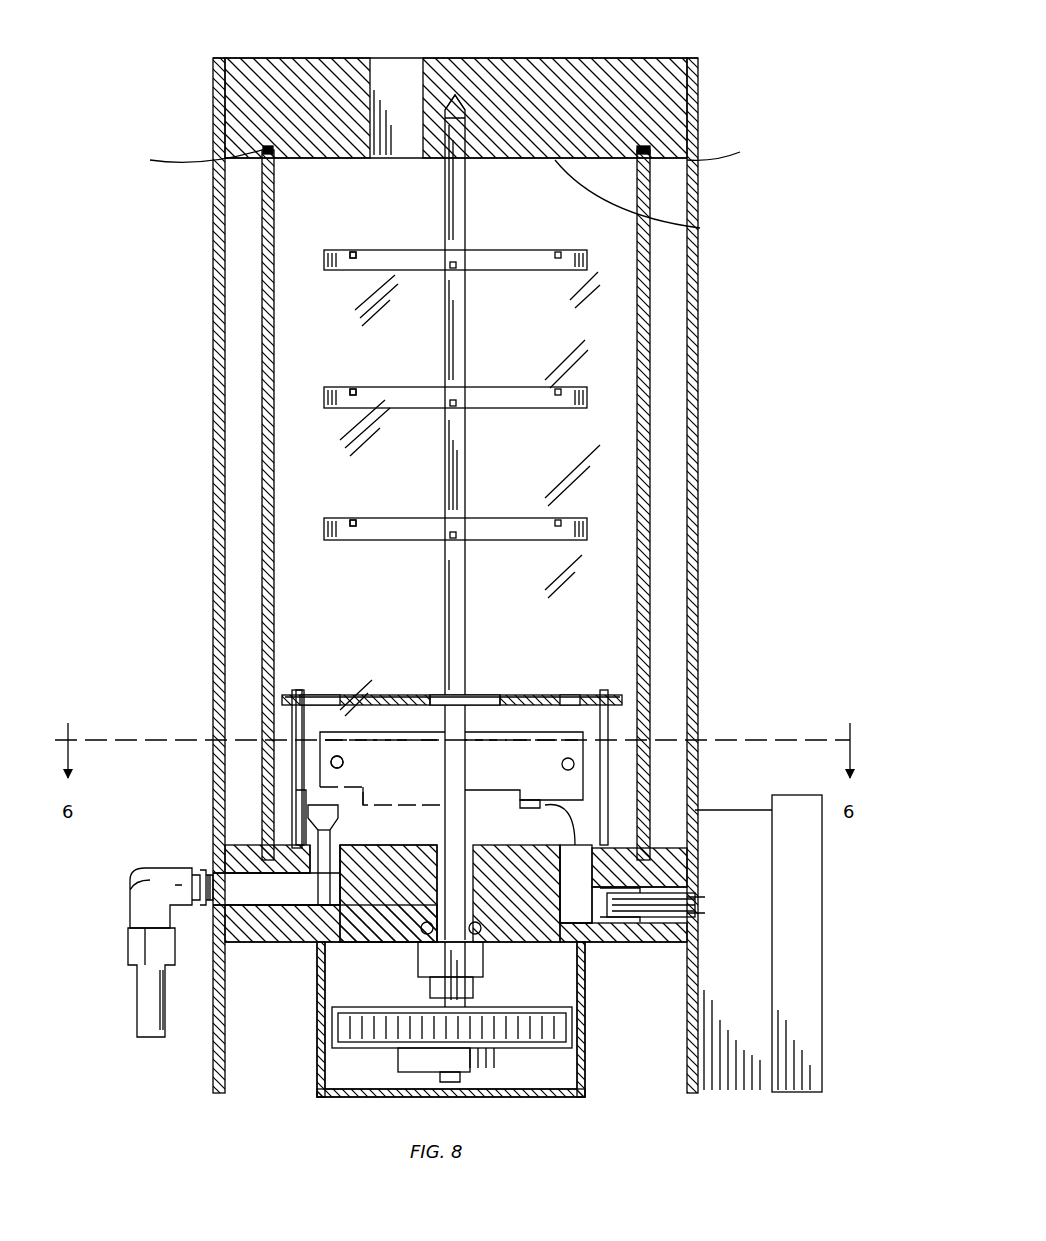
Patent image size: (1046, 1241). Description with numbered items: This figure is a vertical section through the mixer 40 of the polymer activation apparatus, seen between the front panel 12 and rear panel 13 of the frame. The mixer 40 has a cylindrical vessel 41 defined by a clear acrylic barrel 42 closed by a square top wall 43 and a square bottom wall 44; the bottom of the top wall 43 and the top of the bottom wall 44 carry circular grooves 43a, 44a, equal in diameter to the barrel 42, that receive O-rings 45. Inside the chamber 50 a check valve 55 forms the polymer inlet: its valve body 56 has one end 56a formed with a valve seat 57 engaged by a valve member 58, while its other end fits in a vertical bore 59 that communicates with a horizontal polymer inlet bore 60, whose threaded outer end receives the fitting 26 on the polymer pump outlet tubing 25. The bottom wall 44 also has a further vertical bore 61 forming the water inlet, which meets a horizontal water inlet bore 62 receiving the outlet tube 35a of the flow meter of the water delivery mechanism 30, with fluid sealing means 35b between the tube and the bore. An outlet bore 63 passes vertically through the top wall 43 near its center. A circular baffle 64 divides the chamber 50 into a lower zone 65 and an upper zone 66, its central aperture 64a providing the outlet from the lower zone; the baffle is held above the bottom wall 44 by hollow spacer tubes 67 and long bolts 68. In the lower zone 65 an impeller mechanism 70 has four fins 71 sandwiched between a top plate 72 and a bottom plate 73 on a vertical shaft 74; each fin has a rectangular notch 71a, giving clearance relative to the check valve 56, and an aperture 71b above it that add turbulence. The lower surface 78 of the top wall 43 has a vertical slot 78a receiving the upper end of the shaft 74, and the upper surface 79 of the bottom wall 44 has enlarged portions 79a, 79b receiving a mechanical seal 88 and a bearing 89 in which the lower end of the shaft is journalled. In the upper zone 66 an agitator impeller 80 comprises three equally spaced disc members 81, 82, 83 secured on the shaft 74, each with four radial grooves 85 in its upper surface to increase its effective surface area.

The front panel 12 is at (214, 378).
The rear panel 13 is at (698, 490).
The tubing 25 is at (137, 1015).
The fitting 26 is at (140, 885).
The water delivery mechanism 30 is at (822, 905).
The outlet tube 35a is at (680, 910).
The fluid sealing means 35b is at (650, 930).
The mixer 40 is at (716, 330).
The cylindrical vessel 41 is at (652, 572).
The barrel 42 is at (648, 482).
The top wall 43 is at (664, 58).
The circular groove 43a is at (445, 143).
The bottom wall 44 is at (660, 850).
The circular groove 44a is at (290, 842).
The O-rings 45 is at (640, 148).
The chamber 50 is at (622, 457).
The check valve 55 is at (296, 820).
The valve body 56 is at (335, 826).
The end of valve body 56a is at (350, 815).
The valve seat 57 is at (305, 805).
The valve member 58 is at (325, 805).
The vertically oriented bore 59 is at (322, 888).
The polymer inlet bore 60 is at (272, 900).
The vertical bore 61 is at (575, 855).
The water inlet bore 62 is at (605, 942).
The outlet bore 63 is at (404, 58).
The baffle 64 is at (570, 695).
The central aperture 64a is at (430, 700).
The lower zone 65 is at (515, 839).
The upper zone 66 is at (610, 345).
The spacer tubes 67 is at (298, 720).
The bolts 68 is at (650, 690).
The impeller mechanism 70 is at (545, 769).
The fins 71 is at (365, 740).
The rectangular notch 71a is at (300, 765).
The aperture 71b is at (300, 735).
The top plate 72 is at (505, 702).
The bottom plate 73 is at (620, 790).
The shaft 74 is at (445, 570).
The lower surface 78 is at (700, 228).
The vertical slot 78a is at (445, 160).
The upper surface 79 is at (575, 850).
The enlarged portion 79a is at (445, 830).
The enlarged portion 79b is at (422, 935).
The impeller 80 is at (455, 395).
The disc member 81 is at (213, 510).
The disc member 82 is at (492, 408).
The disc member 83 is at (492, 270).
The grooves 85 is at (352, 252).
The mechanical seal 88 is at (465, 845).
The bearing 89 is at (585, 960).